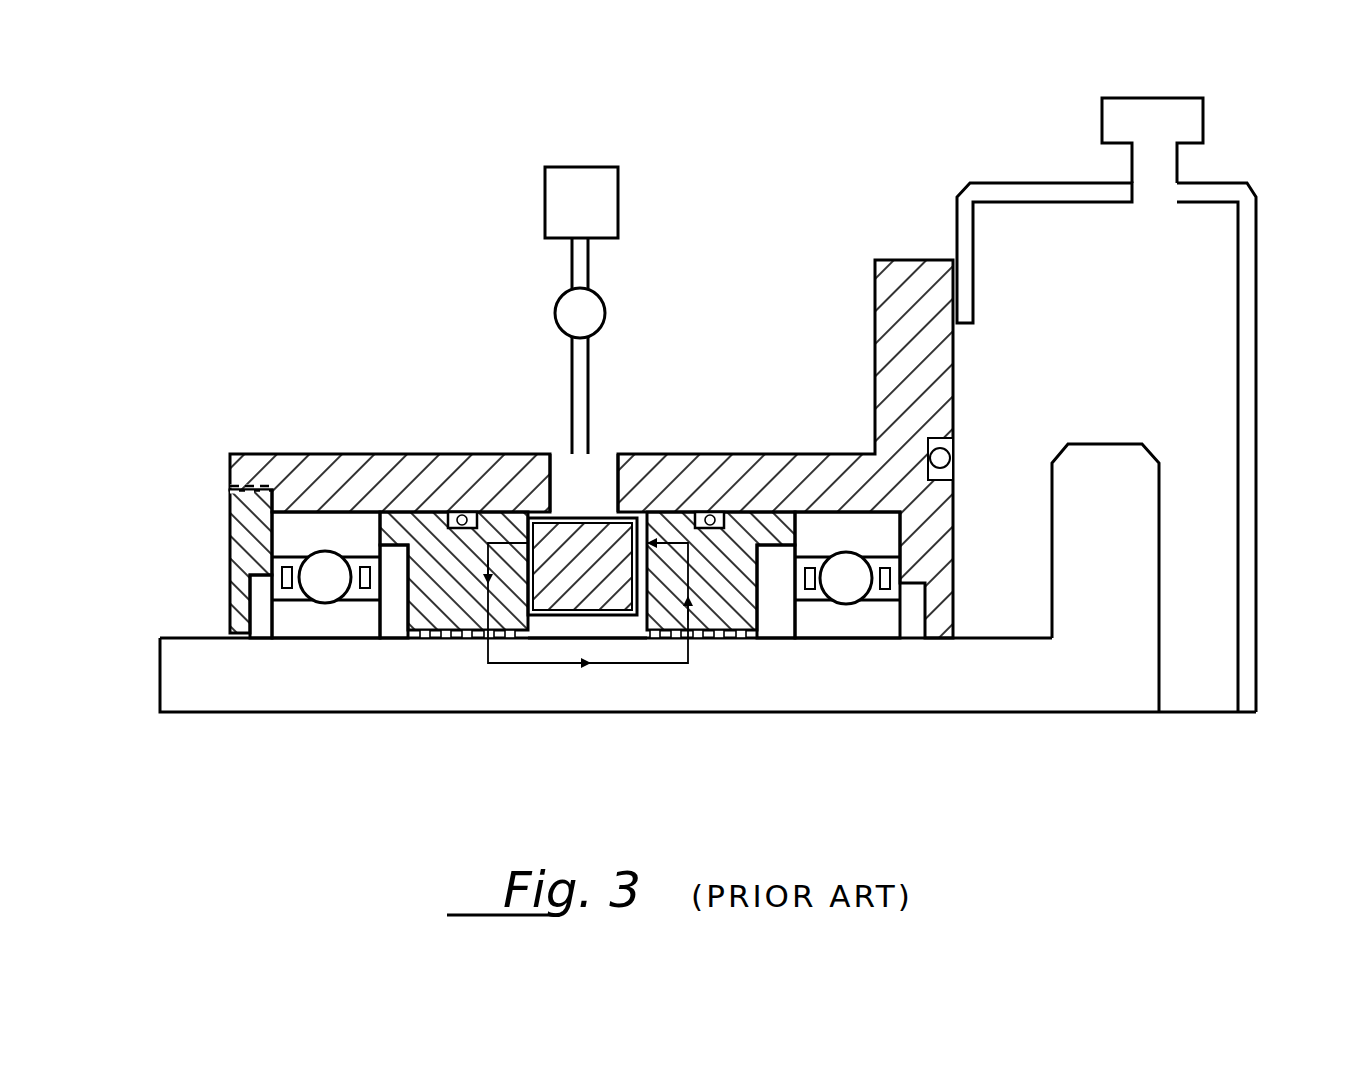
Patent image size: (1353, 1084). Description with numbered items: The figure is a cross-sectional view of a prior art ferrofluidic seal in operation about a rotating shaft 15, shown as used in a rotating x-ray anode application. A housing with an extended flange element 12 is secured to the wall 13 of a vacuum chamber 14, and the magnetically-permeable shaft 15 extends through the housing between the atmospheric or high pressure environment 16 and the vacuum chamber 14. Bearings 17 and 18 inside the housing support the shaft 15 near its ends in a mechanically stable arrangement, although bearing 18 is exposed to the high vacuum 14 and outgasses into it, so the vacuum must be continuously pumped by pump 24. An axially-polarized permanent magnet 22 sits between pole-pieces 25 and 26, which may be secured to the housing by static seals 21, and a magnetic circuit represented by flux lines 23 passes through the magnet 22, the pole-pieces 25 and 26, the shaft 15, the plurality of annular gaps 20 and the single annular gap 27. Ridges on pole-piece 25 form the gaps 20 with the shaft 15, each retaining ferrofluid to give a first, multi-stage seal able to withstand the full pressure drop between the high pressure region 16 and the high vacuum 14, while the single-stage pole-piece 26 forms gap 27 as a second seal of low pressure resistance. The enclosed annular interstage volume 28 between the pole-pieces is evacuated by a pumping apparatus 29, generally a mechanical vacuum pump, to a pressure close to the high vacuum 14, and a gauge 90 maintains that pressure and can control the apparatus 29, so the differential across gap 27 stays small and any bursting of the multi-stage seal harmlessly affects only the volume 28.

The flange element 12 is at (915, 268).
The wall 13 is at (983, 183).
The vacuum chamber 14 is at (1094, 353).
The shaft 15 is at (843, 698).
The atmospheric or high pressure environment 16 is at (136, 553).
The bearing element 17 is at (326, 575).
The bearing element 18 is at (847, 575).
The annular gaps 20 is at (433, 640).
The static seals 21 is at (462, 512).
The permanent magnet 22 is at (582, 566).
The flux lines 23 is at (690, 570).
The pump 24 is at (1152, 140).
The pole-piece 25 is at (412, 545).
The single-stage pole-piece 26 is at (768, 528).
The annular gap 27 is at (723, 640).
The interstage volume 28 is at (587, 627).
The pumping apparatus 29 is at (581, 339).
The gauge 90 is at (597, 313).